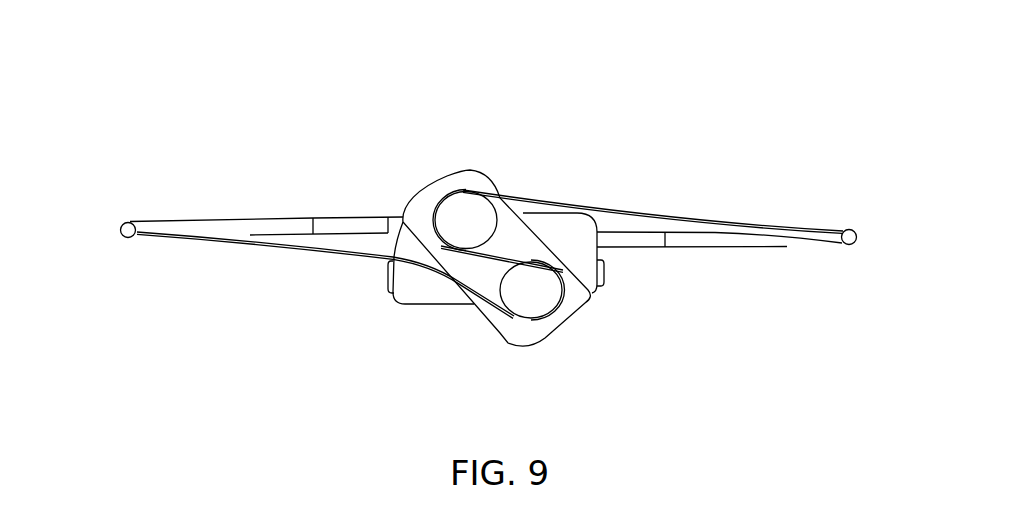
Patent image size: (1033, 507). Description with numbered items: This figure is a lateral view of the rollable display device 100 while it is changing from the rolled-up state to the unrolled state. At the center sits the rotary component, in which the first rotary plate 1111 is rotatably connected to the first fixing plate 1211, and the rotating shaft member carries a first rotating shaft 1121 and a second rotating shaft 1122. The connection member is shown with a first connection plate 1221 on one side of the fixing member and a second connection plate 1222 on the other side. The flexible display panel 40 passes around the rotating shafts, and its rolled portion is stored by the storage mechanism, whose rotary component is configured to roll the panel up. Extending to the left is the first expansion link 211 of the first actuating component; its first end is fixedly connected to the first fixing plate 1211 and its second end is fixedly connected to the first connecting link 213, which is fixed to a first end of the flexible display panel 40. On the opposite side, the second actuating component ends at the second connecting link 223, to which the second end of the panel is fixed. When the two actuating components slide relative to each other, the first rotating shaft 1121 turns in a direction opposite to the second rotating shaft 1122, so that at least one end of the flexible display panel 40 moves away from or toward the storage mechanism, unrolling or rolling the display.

The rollable display device 100 is at (212, 71).
The first expansion link 211 is at (293, 217).
The first connecting link 213 is at (121, 228).
The second connecting link 223 is at (856, 239).
The flexible display panel 40 is at (245, 242).
The first rotary plate 1111 is at (553, 233).
The first rotating shaft 1121 is at (468, 211).
The second rotating shaft 1122 is at (524, 300).
The first fixing plate 1211 is at (506, 318).
The first connection plate 1221 is at (396, 278).
The second connection plate 1222 is at (598, 287).